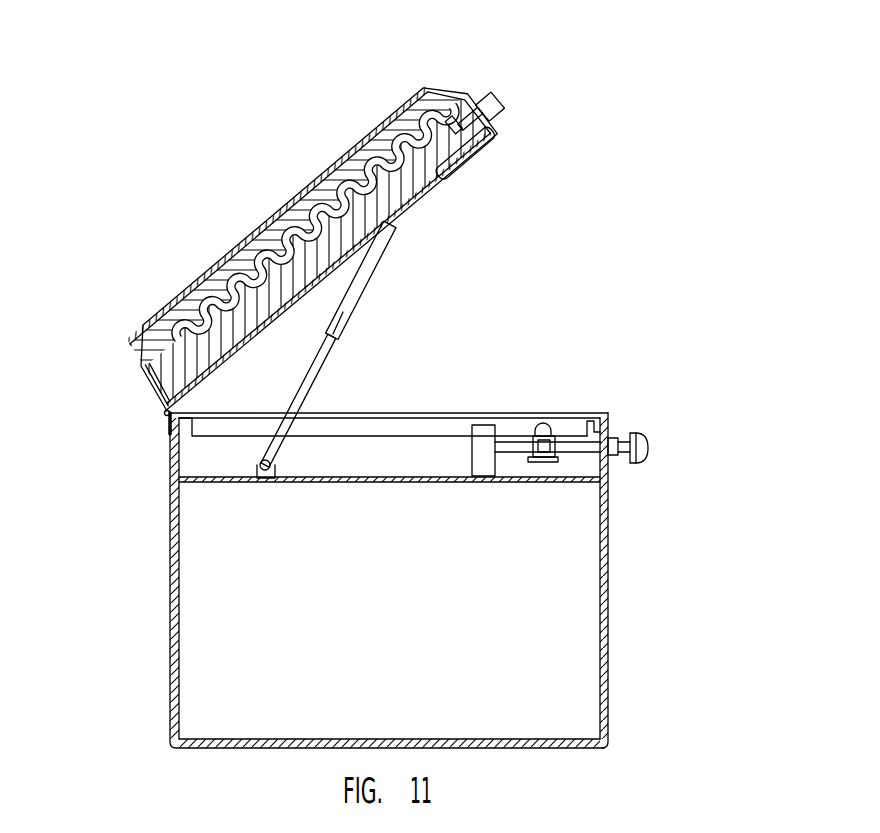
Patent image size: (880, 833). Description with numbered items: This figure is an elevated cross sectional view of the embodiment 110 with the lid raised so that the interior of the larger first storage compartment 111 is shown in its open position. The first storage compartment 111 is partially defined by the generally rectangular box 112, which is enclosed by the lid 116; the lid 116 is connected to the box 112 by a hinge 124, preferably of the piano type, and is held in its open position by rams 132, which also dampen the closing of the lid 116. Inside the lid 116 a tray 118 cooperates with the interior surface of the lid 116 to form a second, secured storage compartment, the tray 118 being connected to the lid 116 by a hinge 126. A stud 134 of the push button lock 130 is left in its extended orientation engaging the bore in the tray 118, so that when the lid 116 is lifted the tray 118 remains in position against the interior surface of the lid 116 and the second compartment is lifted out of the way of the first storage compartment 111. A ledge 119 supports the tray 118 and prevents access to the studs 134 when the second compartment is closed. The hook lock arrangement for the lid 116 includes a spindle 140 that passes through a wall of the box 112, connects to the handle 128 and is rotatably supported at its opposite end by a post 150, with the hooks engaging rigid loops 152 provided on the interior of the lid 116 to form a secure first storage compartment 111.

The embodiment 110 is at (664, 708).
The first storage compartment 111 is at (256, 612).
The box 112 is at (610, 590).
The lid 116 is at (300, 192).
The tray 118 is at (403, 220).
The ledge 119 is at (590, 415).
The hinge 124 is at (167, 413).
The hinge 126 is at (142, 367).
The double wing handle 128 is at (648, 447).
The push button lock 130 is at (500, 112).
The ram 132 is at (348, 312).
The stud 134 is at (463, 103).
The spindle 140 is at (575, 453).
The post 150 is at (472, 452).
The rigid loop 152 is at (458, 177).